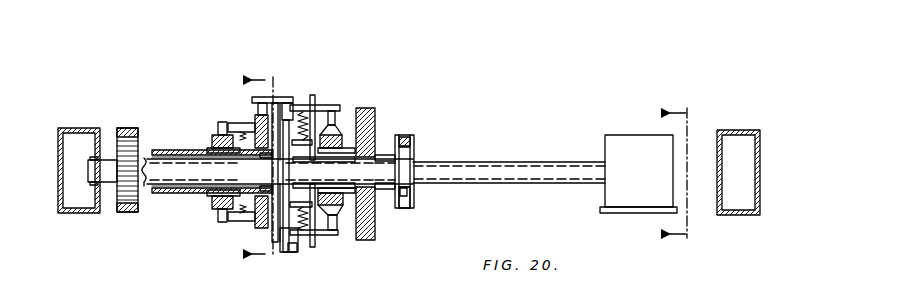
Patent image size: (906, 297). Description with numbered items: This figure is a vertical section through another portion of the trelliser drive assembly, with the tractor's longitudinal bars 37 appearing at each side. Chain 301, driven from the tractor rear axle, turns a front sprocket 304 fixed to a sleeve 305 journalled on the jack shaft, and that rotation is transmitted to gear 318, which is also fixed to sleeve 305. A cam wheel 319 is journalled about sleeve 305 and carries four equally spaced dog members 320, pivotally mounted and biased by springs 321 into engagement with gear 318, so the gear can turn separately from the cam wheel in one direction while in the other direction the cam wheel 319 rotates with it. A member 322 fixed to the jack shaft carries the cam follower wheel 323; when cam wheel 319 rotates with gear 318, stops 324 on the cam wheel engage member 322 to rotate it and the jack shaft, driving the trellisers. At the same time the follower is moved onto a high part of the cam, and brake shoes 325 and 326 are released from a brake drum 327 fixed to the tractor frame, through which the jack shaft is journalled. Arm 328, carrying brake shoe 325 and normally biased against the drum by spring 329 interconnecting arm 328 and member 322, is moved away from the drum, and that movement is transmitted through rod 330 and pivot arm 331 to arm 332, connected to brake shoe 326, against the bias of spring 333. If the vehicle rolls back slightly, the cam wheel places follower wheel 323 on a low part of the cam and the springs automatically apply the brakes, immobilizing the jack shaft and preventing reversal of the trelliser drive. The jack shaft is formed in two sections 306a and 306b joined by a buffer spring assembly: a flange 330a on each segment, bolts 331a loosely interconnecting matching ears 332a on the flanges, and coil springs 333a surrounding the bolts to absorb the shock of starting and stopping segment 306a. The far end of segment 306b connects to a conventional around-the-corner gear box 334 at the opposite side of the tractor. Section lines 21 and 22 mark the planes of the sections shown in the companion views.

The longitudinal bars 37 is at (58, 165).
The chain 301 is at (128, 128).
The front sprocket 304 is at (140, 143).
The sleeve 305 is at (155, 193).
The jack shaft section 306a is at (384, 178).
The jack shaft section 306b is at (533, 168).
The gear 318 is at (212, 143).
The cam wheel 319 is at (258, 228).
The dog members 320 is at (218, 128).
The springs 321 is at (240, 128).
The member 322 is at (274, 96).
The cam follower wheel 323 is at (255, 106).
The stops 324 is at (279, 100).
The brake shoe 325 is at (347, 150).
The brake shoe 326 is at (353, 218).
The brake drum 327 is at (377, 152).
The arm 328 is at (342, 133).
The spring 329 is at (334, 110).
The rod 330 is at (286, 172).
The flange 330a is at (414, 140).
The pivot arm 331 is at (288, 253).
The bolts 331a is at (408, 136).
The arm 332 is at (303, 112).
The ears 332a is at (414, 205).
The spring 333 is at (310, 236).
The coil springs 333a is at (414, 143).
The around the corner gear box 334 is at (647, 182).
The section line 21 is at (268, 168).
The section line 22 is at (689, 175).